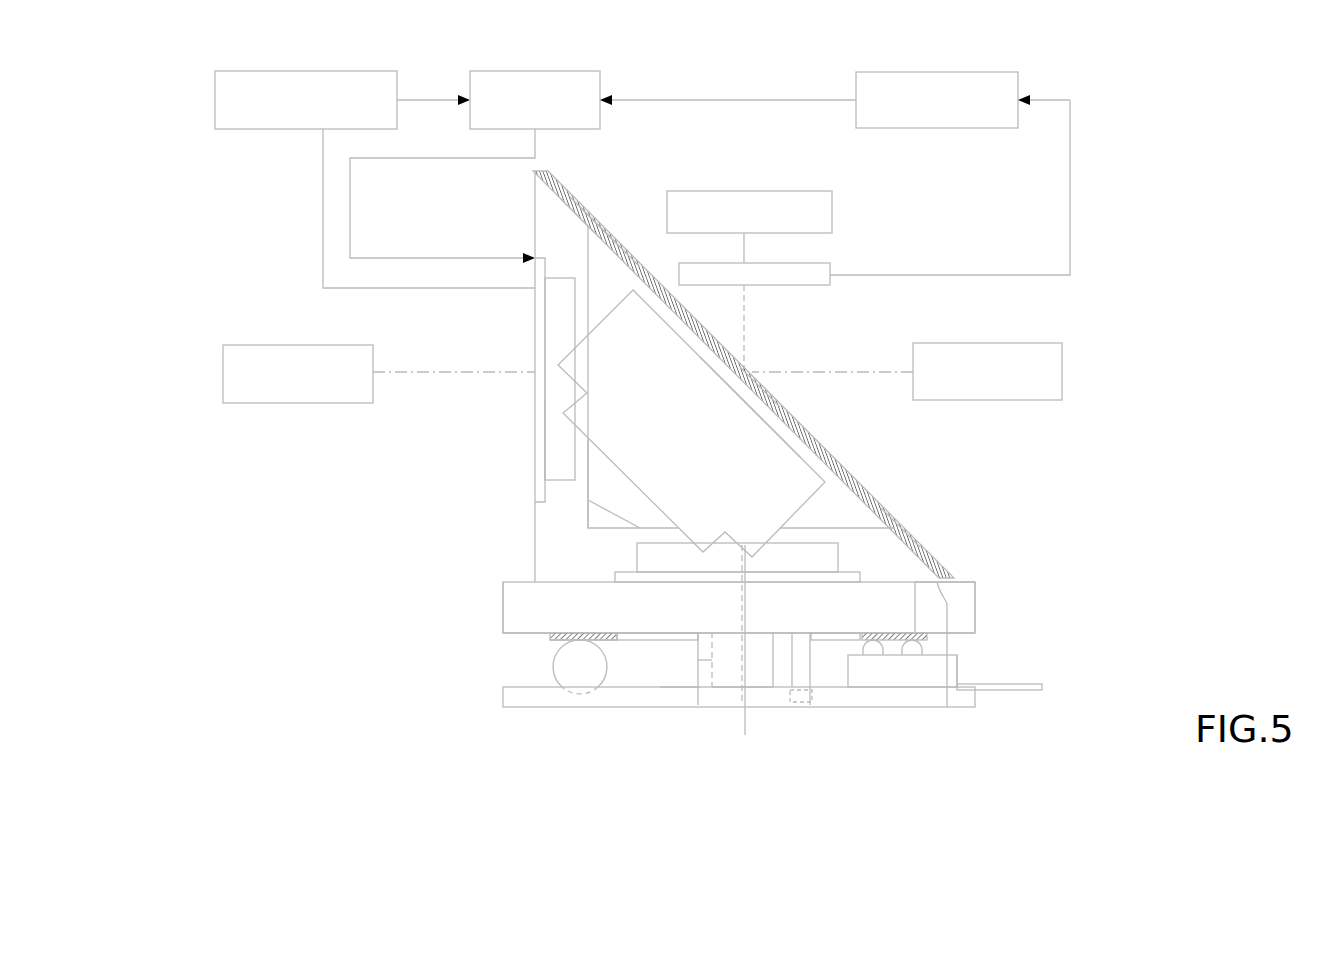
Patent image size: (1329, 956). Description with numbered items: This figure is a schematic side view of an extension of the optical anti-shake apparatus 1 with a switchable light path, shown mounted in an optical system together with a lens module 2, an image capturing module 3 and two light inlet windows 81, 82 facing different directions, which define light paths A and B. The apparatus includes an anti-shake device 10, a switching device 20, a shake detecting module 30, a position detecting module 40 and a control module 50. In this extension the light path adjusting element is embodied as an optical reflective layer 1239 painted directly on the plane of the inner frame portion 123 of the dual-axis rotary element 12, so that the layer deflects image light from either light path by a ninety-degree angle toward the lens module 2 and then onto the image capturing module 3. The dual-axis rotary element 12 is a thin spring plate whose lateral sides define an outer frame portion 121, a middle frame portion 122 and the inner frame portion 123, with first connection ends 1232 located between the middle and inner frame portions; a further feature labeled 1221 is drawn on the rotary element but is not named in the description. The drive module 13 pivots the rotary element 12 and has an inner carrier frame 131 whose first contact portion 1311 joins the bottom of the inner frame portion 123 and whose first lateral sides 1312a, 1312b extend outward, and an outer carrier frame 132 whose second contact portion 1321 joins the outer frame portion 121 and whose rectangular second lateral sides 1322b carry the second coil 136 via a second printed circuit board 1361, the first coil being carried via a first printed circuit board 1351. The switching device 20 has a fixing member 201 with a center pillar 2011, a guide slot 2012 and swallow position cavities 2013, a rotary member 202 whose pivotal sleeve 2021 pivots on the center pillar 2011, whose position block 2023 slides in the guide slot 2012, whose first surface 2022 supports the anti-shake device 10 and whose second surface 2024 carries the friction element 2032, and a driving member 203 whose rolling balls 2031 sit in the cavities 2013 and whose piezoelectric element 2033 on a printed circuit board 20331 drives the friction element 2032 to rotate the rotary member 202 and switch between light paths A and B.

The optical anti-shake apparatus 1 is at (888, 233).
The lens module 2 is at (815, 263).
The image capturing module 3 is at (832, 197).
The anti-shake device 10 is at (968, 553).
The dual-axis rotary element 12 is at (935, 582).
The drive module 13 is at (892, 597).
The switching device 20 is at (993, 573).
The shake detecting module 30 is at (960, 72).
The position detecting module 40 is at (368, 71).
The control module 50 is at (575, 71).
The light inlet window 81 is at (1000, 343).
The light inlet window 82 is at (308, 345).
The outer frame portion 121 is at (556, 176).
The middle frame portion 122 is at (585, 218).
The inner frame portion 123 is at (612, 233).
The inner carrier frame 131 is at (612, 510).
The outer carrier frame 132 is at (947, 707).
The second coil 136 is at (555, 434).
The fixing member 201 is at (975, 703).
The rotary member 202 is at (977, 622).
The driving member 203 is at (962, 633).
The reflecting surface 1221 is at (572, 208).
The first connection ends 1232 is at (592, 228).
The optical reflective layer 1239 is at (768, 398).
The first contact portion 1311 is at (818, 443).
The first lateral sides 1312a is at (598, 537).
The first lateral sides 1312b is at (587, 510).
The second contact portion 1321 is at (978, 600).
The second lateral sides 1322b is at (535, 508).
The first printed circuit board 1351 is at (733, 560).
The second printed circuit board 1361 is at (538, 463).
The center pillar 2011 is at (735, 677).
The guide slot 2012 is at (672, 700).
The swallow position cavity 2013 is at (573, 697).
The pivotal sleeve 2021 is at (697, 667).
The first surface 2022 is at (967, 580).
The position block 2023 is at (800, 698).
The second surface 2024 is at (977, 653).
The rolling ball 2031 is at (568, 675).
The friction element 2032 is at (893, 640).
The piezoelectric element 2033 is at (957, 670).
The printed circuit board 20331 is at (1030, 690).